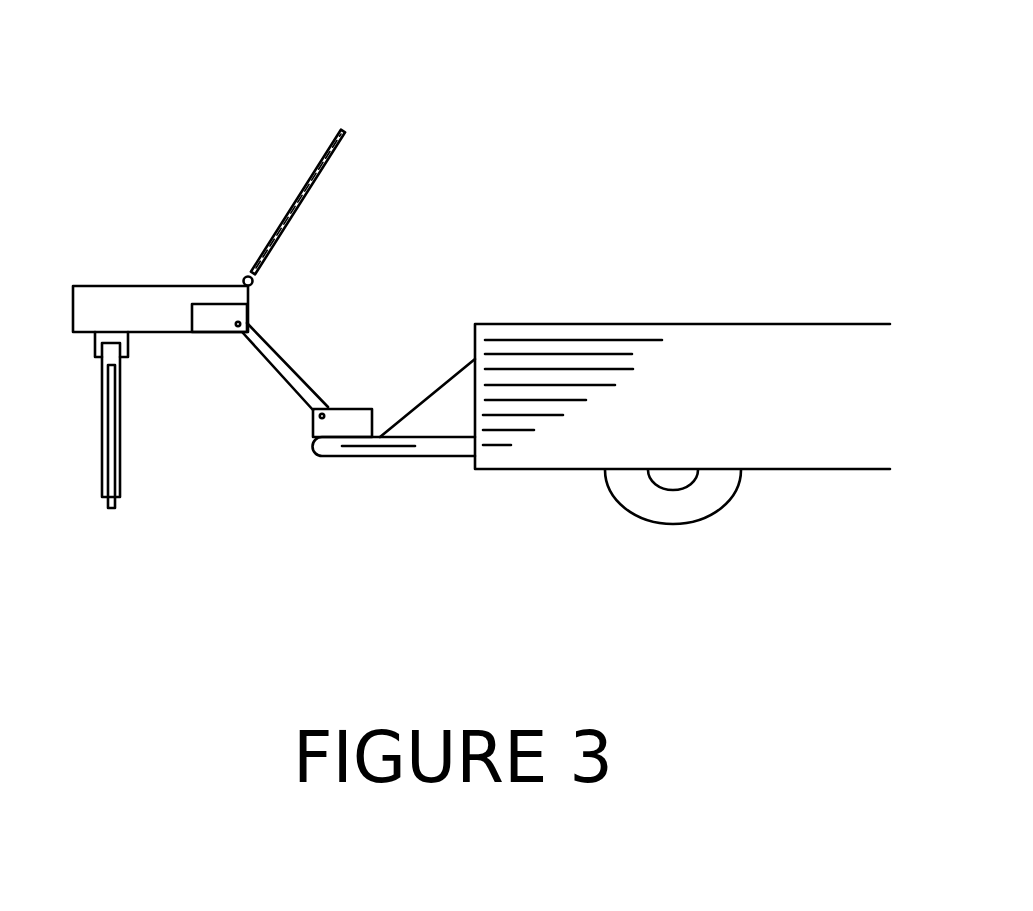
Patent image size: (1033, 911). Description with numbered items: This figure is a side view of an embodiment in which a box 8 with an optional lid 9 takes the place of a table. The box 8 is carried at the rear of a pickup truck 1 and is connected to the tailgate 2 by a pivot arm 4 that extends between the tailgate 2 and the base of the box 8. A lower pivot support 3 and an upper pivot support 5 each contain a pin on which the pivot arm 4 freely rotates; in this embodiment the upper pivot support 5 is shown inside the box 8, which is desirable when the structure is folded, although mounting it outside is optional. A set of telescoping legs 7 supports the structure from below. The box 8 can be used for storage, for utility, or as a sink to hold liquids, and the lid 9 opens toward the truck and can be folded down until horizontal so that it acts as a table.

The pickup truck 1 is at (632, 350).
The tailgate 2 is at (383, 461).
The lower pivot support 3 is at (348, 402).
The pivot arm 4 is at (270, 375).
The upper pivot support 5 is at (213, 320).
The telescoping legs 7 is at (125, 425).
The box 8 is at (113, 280).
The lid 9 is at (300, 173).